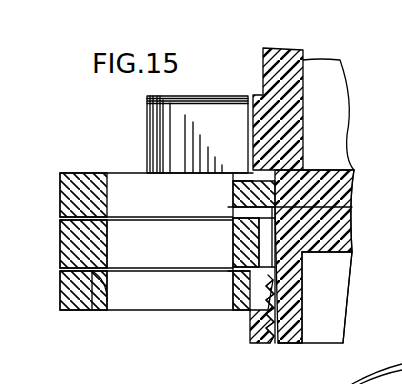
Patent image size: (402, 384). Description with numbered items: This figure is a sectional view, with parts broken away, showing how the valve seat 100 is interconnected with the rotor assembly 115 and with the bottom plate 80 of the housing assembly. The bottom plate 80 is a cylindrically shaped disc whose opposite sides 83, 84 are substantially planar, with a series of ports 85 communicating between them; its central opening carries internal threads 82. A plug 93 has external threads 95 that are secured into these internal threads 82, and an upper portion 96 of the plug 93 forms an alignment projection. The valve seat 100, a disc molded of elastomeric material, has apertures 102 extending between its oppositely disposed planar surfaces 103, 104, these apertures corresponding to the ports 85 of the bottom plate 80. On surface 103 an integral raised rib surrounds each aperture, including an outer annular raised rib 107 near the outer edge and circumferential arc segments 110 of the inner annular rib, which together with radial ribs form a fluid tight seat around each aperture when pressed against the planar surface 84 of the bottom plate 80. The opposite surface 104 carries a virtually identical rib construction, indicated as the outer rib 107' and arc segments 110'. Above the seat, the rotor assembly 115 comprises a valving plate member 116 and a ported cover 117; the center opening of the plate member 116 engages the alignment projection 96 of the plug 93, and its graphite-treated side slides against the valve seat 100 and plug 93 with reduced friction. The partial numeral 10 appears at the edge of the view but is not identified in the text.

The valve seat 100 is at (57, 250).
The side of bottom plate 83 is at (62, 312).
The side of bottom plate 84 is at (92, 310).
The ports 85 is at (163, 299).
The apertures 102 is at (155, 265).
The planar surface of valve seat 103 is at (218, 270).
The planar surface of valve seat 104 is at (210, 238).
The outer annular raised rib 107 is at (103, 244).
The outer annular raised rib 107' is at (107, 195).
The circumferential arc segments of inner annular rib 110 is at (230, 275).
The circumferential arc segments of inner annular rib 110' is at (229, 197).
The bottom plate 80 is at (243, 328).
The internal threads 82 is at (270, 334).
The external threads 95 is at (283, 335).
The upper portion of plug 96 is at (284, 218).
The plug 93 is at (356, 232).
The valving plate member 116 is at (335, 185).
The rotor assembly 115 is at (287, 52).
The ported cover 117 is at (293, 102).
The housing 10 is at (377, 362).